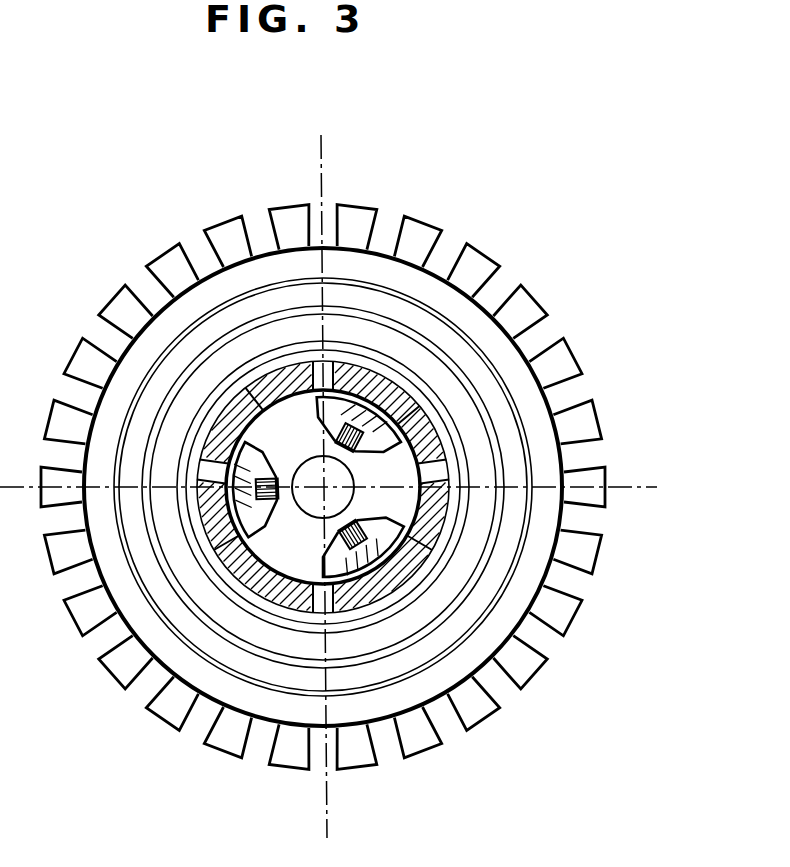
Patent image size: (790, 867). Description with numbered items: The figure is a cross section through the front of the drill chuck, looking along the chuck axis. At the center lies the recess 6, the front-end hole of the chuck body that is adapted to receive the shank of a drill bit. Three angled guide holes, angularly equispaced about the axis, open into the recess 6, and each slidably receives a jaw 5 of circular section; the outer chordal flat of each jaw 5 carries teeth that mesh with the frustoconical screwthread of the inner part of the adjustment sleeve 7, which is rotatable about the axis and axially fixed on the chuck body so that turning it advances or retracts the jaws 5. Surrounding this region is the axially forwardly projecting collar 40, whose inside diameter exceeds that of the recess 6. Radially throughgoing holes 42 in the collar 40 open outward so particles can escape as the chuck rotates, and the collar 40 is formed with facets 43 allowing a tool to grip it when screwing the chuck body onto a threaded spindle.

The jaw 5 is at (335, 425).
The recess 6 is at (290, 520).
The adjustment sleeve 7 is at (487, 243).
The collar 40 is at (420, 550).
The radially throughgoing holes 42 is at (427, 477).
The facets 43 is at (447, 523).